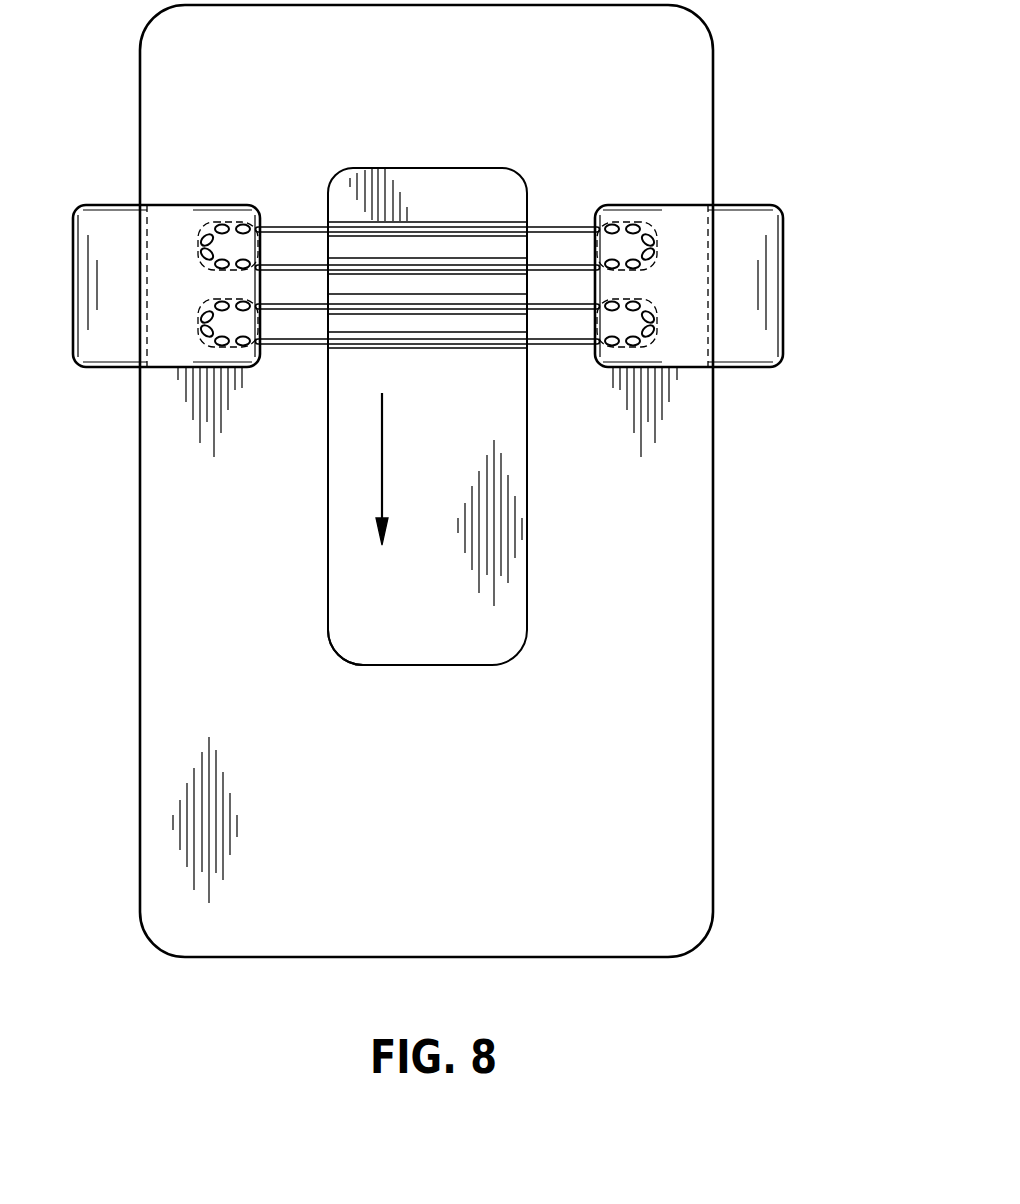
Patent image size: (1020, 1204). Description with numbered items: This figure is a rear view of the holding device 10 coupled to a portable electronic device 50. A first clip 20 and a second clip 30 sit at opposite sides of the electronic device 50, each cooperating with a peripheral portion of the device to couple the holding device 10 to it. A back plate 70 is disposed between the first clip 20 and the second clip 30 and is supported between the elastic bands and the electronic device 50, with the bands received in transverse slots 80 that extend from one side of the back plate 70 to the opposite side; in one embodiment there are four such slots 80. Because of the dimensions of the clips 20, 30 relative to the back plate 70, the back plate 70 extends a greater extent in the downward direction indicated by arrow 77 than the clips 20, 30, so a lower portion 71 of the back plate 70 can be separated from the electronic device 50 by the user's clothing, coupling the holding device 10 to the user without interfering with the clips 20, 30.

The holding device 10 is at (573, 432).
The first clip 20 is at (102, 205).
The second clip 30 is at (762, 205).
The electronic device 50 is at (493, 856).
The back plate 70 is at (520, 173).
The portion of the back plate 71 is at (378, 642).
The arrow 77 is at (382, 468).
The slot 80 is at (340, 313).